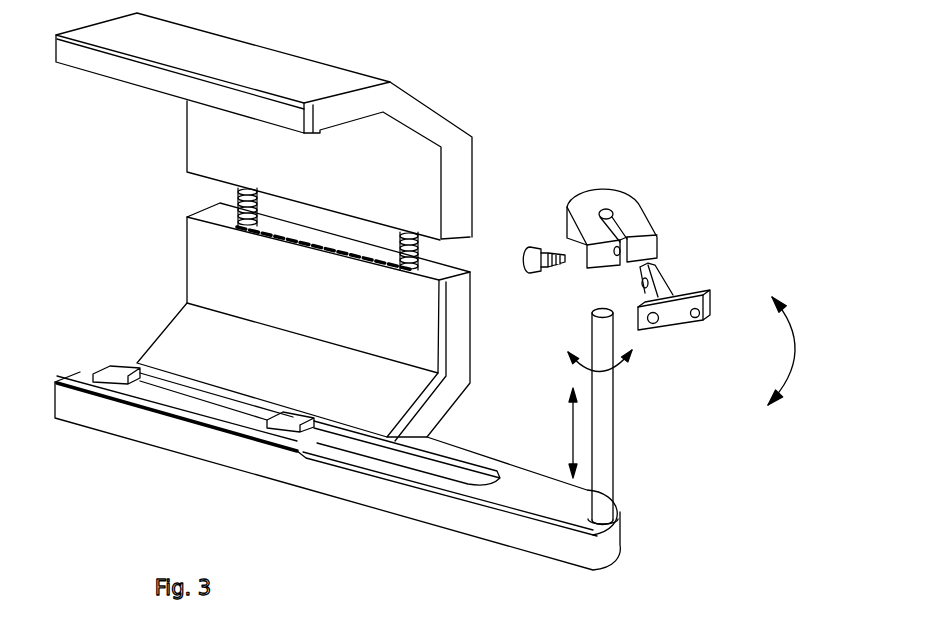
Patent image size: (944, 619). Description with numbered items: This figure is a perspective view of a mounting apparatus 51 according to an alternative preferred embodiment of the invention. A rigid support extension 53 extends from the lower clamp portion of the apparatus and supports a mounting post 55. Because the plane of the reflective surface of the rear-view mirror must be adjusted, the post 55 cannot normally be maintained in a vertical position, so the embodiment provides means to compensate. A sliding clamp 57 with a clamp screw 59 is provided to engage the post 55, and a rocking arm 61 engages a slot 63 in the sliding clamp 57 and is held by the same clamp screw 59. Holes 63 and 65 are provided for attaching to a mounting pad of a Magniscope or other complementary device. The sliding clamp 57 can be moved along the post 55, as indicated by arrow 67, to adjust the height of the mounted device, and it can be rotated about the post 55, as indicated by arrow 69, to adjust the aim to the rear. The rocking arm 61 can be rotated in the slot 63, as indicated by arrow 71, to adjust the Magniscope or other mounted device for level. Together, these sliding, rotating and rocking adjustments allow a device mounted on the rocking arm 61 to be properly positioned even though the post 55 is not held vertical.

The mounting apparatus 51 is at (412, 28).
The rigid support extension 53 is at (435, 505).
The mounting post 55 is at (617, 490).
The sliding clamp 57 is at (607, 192).
The clamp screw 59 is at (552, 250).
The rocking arm 61 is at (708, 312).
The slot 63 is at (617, 223).
The hole 65 is at (655, 327).
The arrow 67 is at (570, 435).
The arrow 69 is at (612, 375).
The arrow 71 is at (800, 340).